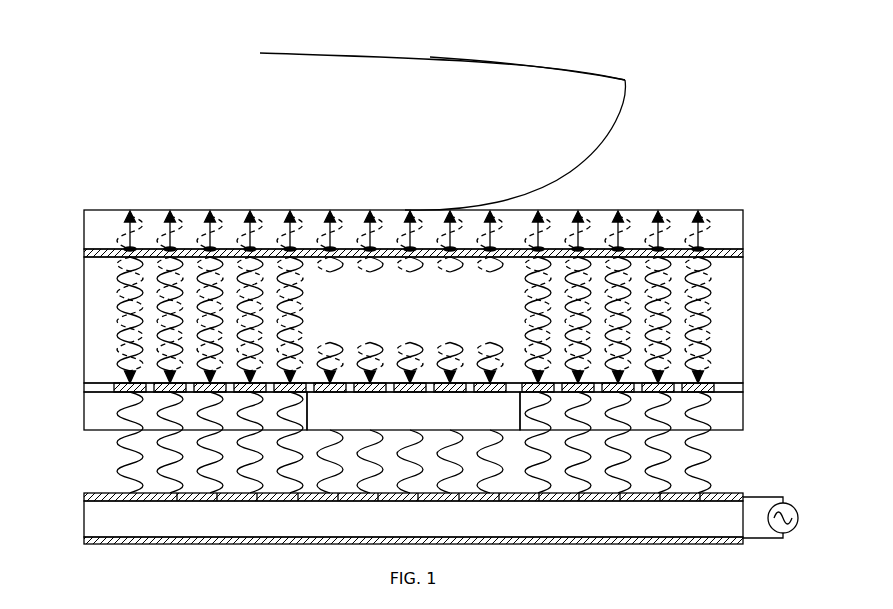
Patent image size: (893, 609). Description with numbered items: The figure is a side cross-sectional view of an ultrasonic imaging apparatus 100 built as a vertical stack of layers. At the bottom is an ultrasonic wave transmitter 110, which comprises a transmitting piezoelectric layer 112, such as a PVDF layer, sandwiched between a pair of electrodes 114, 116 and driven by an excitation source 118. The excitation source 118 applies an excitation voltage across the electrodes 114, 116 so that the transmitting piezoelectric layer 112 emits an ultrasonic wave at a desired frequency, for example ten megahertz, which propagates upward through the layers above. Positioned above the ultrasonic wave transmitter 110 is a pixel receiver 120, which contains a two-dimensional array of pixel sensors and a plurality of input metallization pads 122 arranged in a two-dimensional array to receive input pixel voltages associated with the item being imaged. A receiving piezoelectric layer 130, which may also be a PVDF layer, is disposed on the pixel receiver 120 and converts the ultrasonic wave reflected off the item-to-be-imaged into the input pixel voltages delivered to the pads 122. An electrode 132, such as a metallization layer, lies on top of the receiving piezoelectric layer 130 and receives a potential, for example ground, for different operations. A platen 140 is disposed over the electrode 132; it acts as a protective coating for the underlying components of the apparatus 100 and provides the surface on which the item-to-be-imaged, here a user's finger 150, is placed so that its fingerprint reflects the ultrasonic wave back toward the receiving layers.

The ultrasonic imaging apparatus 100 is at (694, 151).
The ultrasonic wave transmitter 110 is at (102, 480).
The transmitting piezoelectric layer 112 is at (595, 528).
The electrode 114 is at (712, 545).
The electrode 116 is at (727, 493).
The excitation source 118 is at (783, 503).
The pixel receiver 120 is at (472, 420).
The input metallization pads 122 is at (713, 383).
The receiving piezoelectric layer 130 is at (427, 350).
The electrode 132 is at (732, 250).
The platen 140 is at (727, 208).
The finger 150 is at (562, 63).